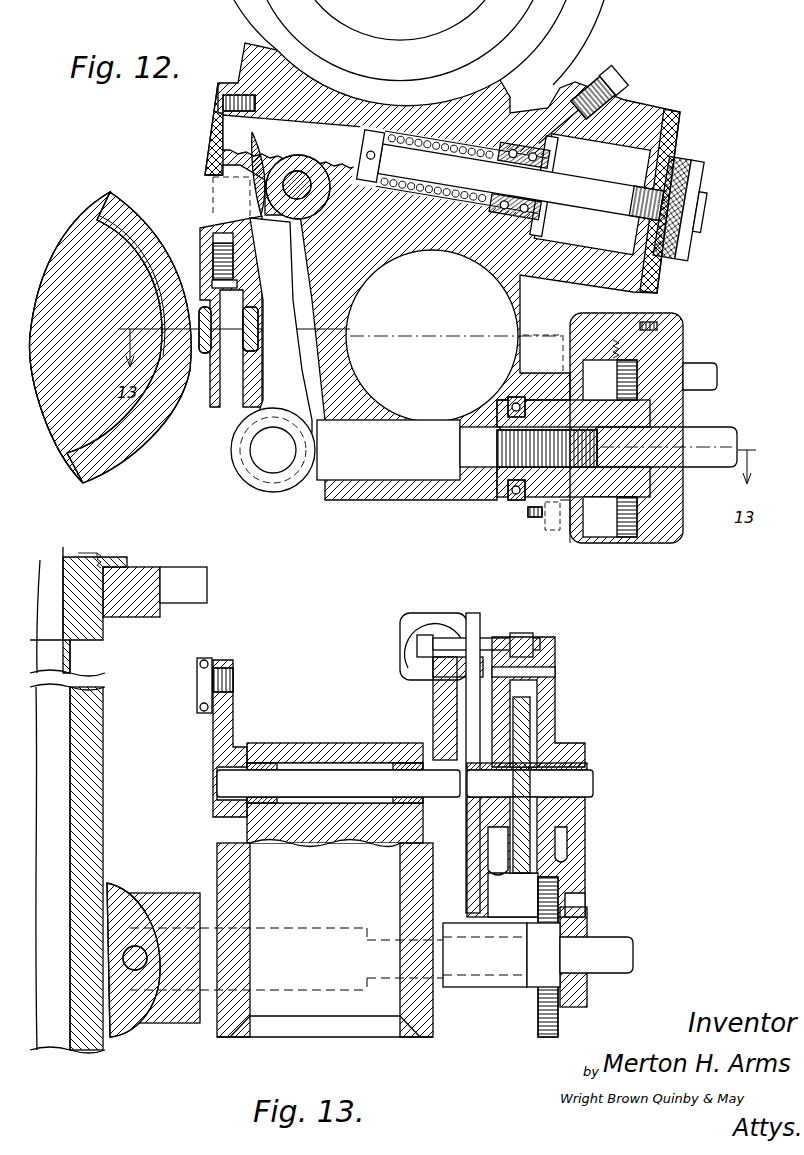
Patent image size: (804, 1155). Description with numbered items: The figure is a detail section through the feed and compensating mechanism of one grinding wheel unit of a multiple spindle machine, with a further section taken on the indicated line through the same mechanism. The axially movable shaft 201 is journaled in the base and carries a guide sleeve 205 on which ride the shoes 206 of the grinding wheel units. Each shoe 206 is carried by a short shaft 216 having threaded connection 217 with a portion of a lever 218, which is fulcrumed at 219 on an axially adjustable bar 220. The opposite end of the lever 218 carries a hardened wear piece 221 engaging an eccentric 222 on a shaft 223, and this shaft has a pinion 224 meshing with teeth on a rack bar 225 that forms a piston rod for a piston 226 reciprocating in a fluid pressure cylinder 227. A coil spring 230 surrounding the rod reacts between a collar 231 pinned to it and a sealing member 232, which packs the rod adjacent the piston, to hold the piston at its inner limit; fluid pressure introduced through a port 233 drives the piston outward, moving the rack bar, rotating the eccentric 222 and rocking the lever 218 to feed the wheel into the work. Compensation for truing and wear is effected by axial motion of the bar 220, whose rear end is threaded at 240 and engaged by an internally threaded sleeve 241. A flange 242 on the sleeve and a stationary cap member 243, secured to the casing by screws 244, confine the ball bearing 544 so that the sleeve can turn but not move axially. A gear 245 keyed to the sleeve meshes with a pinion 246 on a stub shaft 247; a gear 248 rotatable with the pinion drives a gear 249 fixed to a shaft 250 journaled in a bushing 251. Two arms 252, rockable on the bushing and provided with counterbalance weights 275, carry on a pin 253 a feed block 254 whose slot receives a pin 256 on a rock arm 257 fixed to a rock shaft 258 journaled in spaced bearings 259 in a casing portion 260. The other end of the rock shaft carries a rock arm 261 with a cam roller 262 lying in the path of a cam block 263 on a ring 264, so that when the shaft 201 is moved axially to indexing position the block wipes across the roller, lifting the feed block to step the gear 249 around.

In FIG. 12, the shaft 201 is at (88, 250).
In FIG. 13, the shaft 201 is at (53, 573).
In FIG. 12, the guide sleeve 205 is at (148, 440).
In FIG. 13, the guide sleeve 205 is at (95, 787).
In FIG. 12, the shoe 206 is at (200, 402).
In FIG. 13, the shoe 206 is at (118, 897).
In FIG. 12, the short shaft 216 is at (233, 433).
In FIG. 13, the short shaft 216 is at (141, 950).
In FIG. 12, the threaded connection 217 is at (202, 232).
In FIG. 12, the lever 218 is at (277, 368).
In FIG. 13, the lever 218 is at (191, 897).
In FIG. 12, the fulcrum 219 is at (273, 472).
In FIG. 12, the bar 220 is at (370, 472).
In FIG. 13, the bar 220 is at (594, 953).
In FIG. 12, the hardened wear piece 221 is at (294, 141).
In FIG. 12, the eccentric 222 is at (294, 238).
In FIG. 12, the shaft 223 is at (300, 165).
In FIG. 12, the pinion 224 is at (343, 140).
In FIG. 12, the rack bar 225 is at (386, 112).
In FIG. 12, the piston 226 is at (589, 194).
In FIG. 12, the fluid pressure cylinder 227 is at (641, 123).
In FIG. 12, the coil spring 230 is at (450, 137).
In FIG. 12, the collar 231 is at (511, 180).
In FIG. 12, the sealing member 232 is at (529, 140).
In FIG. 12, the port 233 is at (580, 88).
In FIG. 12, the threaded portion 240 is at (500, 448).
In FIG. 12, the internally threaded sleeve 241 is at (611, 421).
In FIG. 12, the flange 242 is at (523, 488).
In FIG. 12, the cap member 243 is at (581, 544).
In FIG. 12, the screws 244 is at (553, 514).
In FIG. 12, the gear 245 is at (648, 511).
In FIG. 13, the gear 245 is at (541, 1020).
In FIG. 12, the pinion 246 is at (657, 363).
In FIG. 12, the stub shaft 247 is at (708, 370).
In FIG. 12, the gear 248 is at (618, 357).
In FIG. 12, the gear 249 is at (631, 523).
In FIG. 13, the gear 249 is at (528, 848).
In FIG. 13, the shaft 250 is at (581, 782).
In FIG. 13, the bushing 251 is at (548, 763).
In FIG. 13, the arms 252 is at (490, 637).
In FIG. 13, the pin 253 is at (551, 673).
In FIG. 13, the feed block 254 is at (527, 633).
In FIG. 13, the pin 256 is at (490, 617).
In FIG. 13, the rock arm 257 is at (430, 700).
In FIG. 13, the rock shaft 258 is at (330, 778).
In FIG. 13, the bearings 259 is at (268, 763).
In FIG. 13, the casing portion 260 is at (301, 747).
In FIG. 13, the rock arm 261 is at (221, 748).
In FIG. 13, the cam roller 262 is at (199, 667).
In FIG. 13, the cam block 263 is at (187, 573).
In FIG. 13, the ring 264 is at (147, 573).
In FIG. 13, the counterbalance weights 275 is at (498, 866).
In FIG. 12, the ball bearing 544 is at (520, 523).